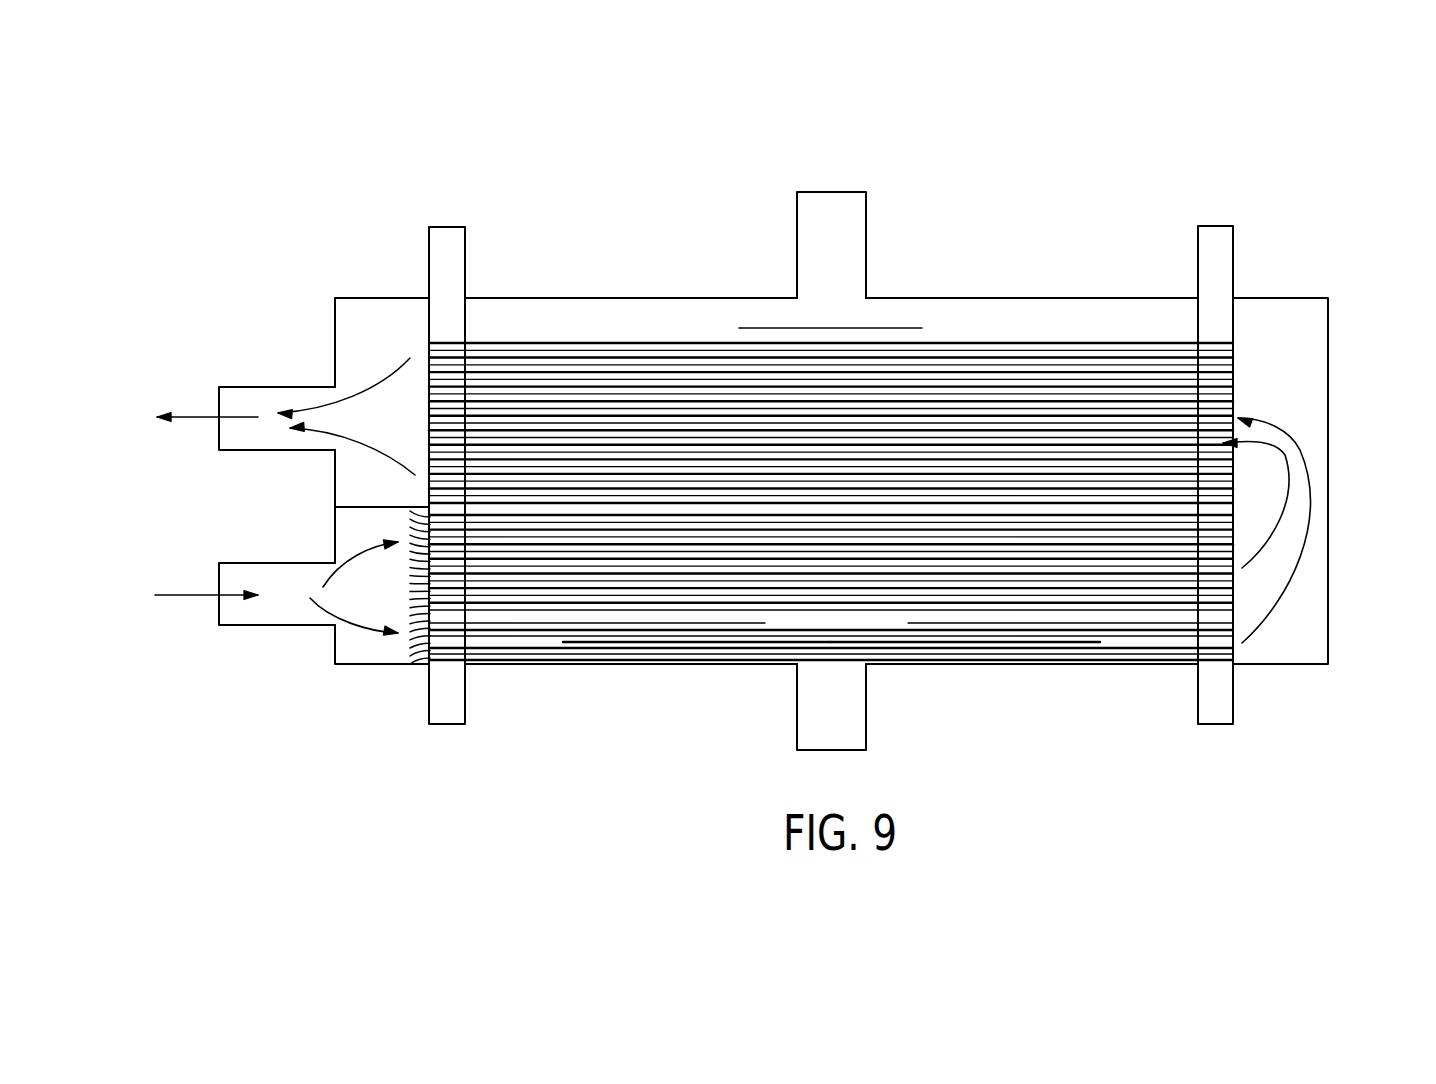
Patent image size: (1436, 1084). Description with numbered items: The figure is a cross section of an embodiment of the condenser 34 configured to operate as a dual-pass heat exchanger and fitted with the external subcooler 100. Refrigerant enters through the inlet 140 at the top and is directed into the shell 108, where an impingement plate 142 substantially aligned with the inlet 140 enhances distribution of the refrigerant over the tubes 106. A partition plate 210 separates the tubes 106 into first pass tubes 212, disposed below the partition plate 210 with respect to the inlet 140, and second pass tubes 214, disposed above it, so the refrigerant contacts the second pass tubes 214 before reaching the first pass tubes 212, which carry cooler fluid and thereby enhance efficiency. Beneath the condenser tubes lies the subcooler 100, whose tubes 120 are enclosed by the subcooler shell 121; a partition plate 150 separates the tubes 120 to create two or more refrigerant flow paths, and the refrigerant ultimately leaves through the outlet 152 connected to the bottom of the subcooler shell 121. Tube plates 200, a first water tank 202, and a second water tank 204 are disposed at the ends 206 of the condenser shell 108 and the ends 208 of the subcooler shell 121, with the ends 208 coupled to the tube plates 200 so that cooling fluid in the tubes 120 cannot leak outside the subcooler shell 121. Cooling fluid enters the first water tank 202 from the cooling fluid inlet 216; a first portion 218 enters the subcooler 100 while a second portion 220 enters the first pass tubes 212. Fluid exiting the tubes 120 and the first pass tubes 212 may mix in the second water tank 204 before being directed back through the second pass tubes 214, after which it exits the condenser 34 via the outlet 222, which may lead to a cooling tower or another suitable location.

The condenser 34 is at (673, 280).
The external subcooler 100 is at (646, 700).
The tubes 106 is at (1026, 350).
The shell 108 is at (631, 298).
The tubes 120 is at (1095, 648).
The subcooler shell 121 is at (1008, 664).
The inlet 140 is at (829, 192).
The impingement plate 142 is at (884, 328).
The partition plate 150 is at (565, 642).
The outlet 152 is at (830, 750).
The tube plates 200 is at (447, 235).
The first water tank 202 is at (382, 298).
The second water tank 204 is at (1300, 298).
The ends 206 is at (308, 311).
The ends 208 is at (382, 677).
The partition plate 210 is at (368, 507).
The first pass tubes 212 is at (1245, 595).
The second pass tubes 214 is at (1248, 393).
The cooling fluid inlet 216 is at (247, 563).
The first portion 218 is at (322, 612).
The second portion 220 is at (353, 548).
The outlet 222 is at (278, 387).